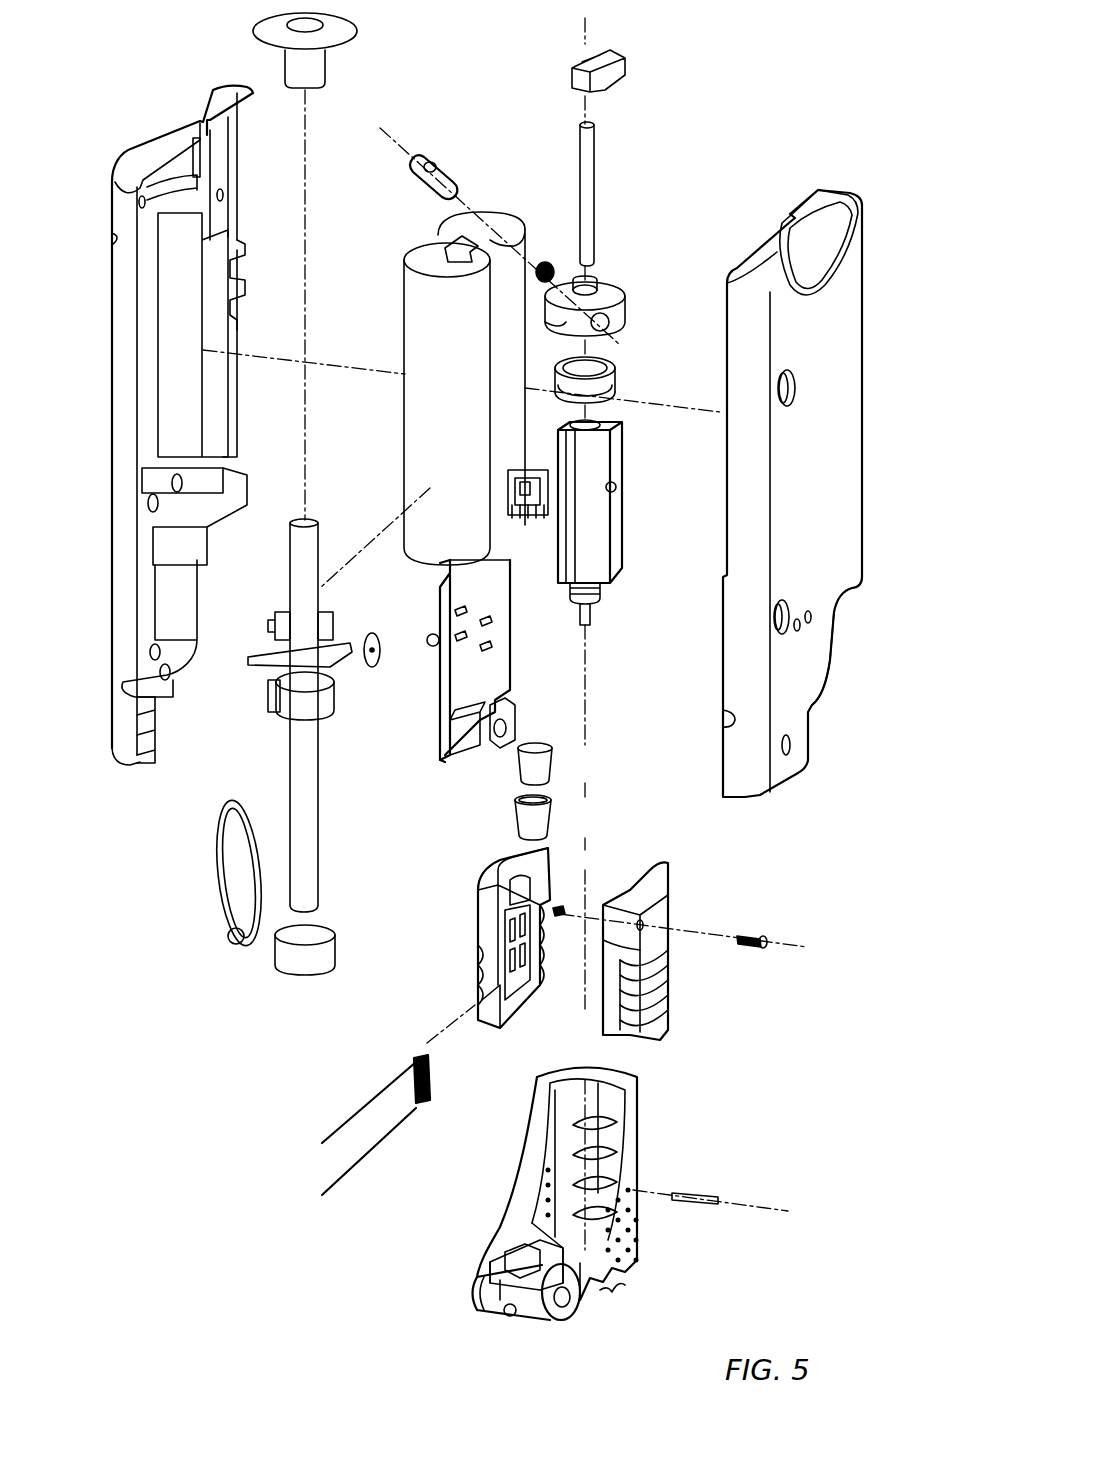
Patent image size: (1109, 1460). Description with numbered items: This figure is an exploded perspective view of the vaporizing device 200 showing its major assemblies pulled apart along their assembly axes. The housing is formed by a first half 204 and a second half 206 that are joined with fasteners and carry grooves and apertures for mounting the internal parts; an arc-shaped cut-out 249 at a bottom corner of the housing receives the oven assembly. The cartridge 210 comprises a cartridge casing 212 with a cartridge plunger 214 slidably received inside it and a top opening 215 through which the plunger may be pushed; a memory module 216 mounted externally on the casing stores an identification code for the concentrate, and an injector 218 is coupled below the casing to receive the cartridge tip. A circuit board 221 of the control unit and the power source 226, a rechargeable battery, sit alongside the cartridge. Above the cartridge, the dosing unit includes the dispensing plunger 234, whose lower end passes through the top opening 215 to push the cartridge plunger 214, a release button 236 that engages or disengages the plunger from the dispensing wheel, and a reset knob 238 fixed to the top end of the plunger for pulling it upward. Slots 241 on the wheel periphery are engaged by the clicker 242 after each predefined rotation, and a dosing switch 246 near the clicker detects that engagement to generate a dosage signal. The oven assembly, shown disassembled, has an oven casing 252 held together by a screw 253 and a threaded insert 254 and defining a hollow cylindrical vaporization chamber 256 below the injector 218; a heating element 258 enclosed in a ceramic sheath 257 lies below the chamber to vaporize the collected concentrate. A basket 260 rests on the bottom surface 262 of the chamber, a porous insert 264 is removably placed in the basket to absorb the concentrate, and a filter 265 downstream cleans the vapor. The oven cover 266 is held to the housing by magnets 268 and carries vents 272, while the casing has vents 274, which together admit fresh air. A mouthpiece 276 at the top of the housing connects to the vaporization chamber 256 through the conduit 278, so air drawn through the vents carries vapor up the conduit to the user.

The vaporizing device 200 is at (768, 68).
The first half 204 is at (815, 195).
The second half 206 is at (135, 165).
The cartridge 210 is at (632, 566).
The cartridge casing 212 is at (610, 520).
The cartridge plunger 214 is at (615, 381).
The top opening 215 is at (605, 422).
The memory module 216 is at (508, 490).
The injector 218 is at (565, 590).
The circuit board 221 is at (445, 698).
The power source 226 is at (420, 302).
The dispensing plunger 234 is at (595, 165).
The release button 236 is at (432, 162).
The reset knob 238 is at (605, 85).
The slots 241 is at (626, 318).
The clicker 242 is at (268, 700).
The dosing switch 246 is at (320, 625).
The cut-out 249 is at (833, 667).
The oven casing 252 is at (665, 963).
The screw 253 is at (757, 937).
The threaded insert 254 is at (568, 910).
The vaporization chamber 256 is at (550, 1010).
The ceramic sheath 257 is at (432, 1082).
The heating element 258 is at (408, 1092).
The basket 260 is at (512, 820).
The bottom surface 262 is at (480, 890).
The porous insert 264 is at (508, 762).
The filter 265 is at (310, 958).
The oven cover 266 is at (598, 1282).
The magnets 268 is at (178, 678).
The vents 272 is at (632, 1240).
The vents 274 is at (655, 1000).
The mouthpiece 276 is at (265, 36).
The conduit 278 is at (320, 878).